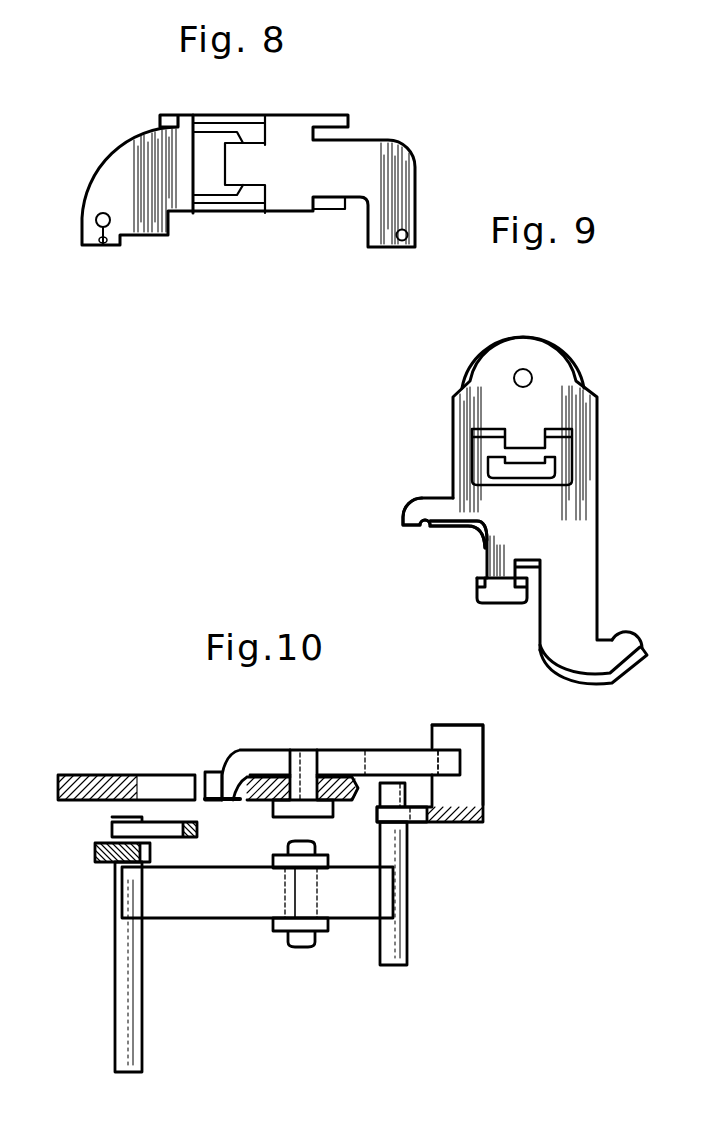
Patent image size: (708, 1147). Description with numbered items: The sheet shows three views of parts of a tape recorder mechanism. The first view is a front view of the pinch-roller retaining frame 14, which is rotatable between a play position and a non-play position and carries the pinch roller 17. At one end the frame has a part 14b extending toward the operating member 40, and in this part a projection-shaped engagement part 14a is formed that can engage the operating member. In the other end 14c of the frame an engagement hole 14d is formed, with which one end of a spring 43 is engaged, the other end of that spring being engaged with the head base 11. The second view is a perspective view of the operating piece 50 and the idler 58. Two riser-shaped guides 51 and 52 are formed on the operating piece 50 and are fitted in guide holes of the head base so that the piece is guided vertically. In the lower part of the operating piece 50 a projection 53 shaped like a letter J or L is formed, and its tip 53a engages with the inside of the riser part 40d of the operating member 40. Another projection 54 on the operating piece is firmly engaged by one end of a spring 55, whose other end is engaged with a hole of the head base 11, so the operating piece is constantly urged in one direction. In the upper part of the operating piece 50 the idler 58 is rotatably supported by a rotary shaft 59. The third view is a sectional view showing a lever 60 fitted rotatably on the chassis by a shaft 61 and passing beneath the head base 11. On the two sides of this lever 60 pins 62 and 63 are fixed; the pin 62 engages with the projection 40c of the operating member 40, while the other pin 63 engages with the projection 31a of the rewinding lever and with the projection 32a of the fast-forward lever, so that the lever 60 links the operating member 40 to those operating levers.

In FIG. 10, the head base 11 is at (107, 775).
In FIG. 8, the pinch-roller retaining frame 14 is at (292, 130).
In FIG. 8, the engagement part 14a is at (402, 241).
In FIG. 8, the extending part 14b is at (397, 213).
In FIG. 8, the other end of the pinch-roller retaining frame 14c is at (123, 183).
In FIG. 8, the engagement hole 14d is at (96, 221).
In FIG. 8, the pinch roller 17 is at (122, 146).
In FIG. 8, the spring 43 is at (110, 245).
In FIG. 10, the projection of the rewinding lever 31a is at (104, 860).
In FIG. 10, the projection of the fast-forward lever 32a is at (112, 827).
In FIG. 10, the operating member 40 is at (485, 816).
In FIG. 10, the projection of the operating member 40c is at (397, 815).
In FIG. 10, the riser part 40d is at (478, 758).
In FIG. 9, the operating piece 50 is at (604, 391).
In FIG. 10, the operating piece 50 is at (383, 746).
In FIG. 9, the riser-shaped guide 51 is at (523, 468).
In FIG. 10, the riser-shaped guide 51 is at (302, 770).
In FIG. 9, the riser-shaped guide 52 is at (503, 593).
In FIG. 9, the projection 53 is at (623, 652).
In FIG. 10, the projection 53 is at (448, 758).
In FIG. 9, the tip of the projection 53a is at (633, 627).
In FIG. 9, the projection 54 is at (418, 504).
In FIG. 10, the projection 54 is at (232, 798).
In FIG. 10, the spring 55 is at (215, 772).
In FIG. 9, the idler 58 is at (575, 352).
In FIG. 9, the rotary shaft 59 is at (532, 379).
In FIG. 10, the lever 60 is at (235, 908).
In FIG. 10, the shaft 61 is at (312, 940).
In FIG. 10, the pin 62 is at (407, 955).
In FIG. 10, the pin 63 is at (132, 1043).